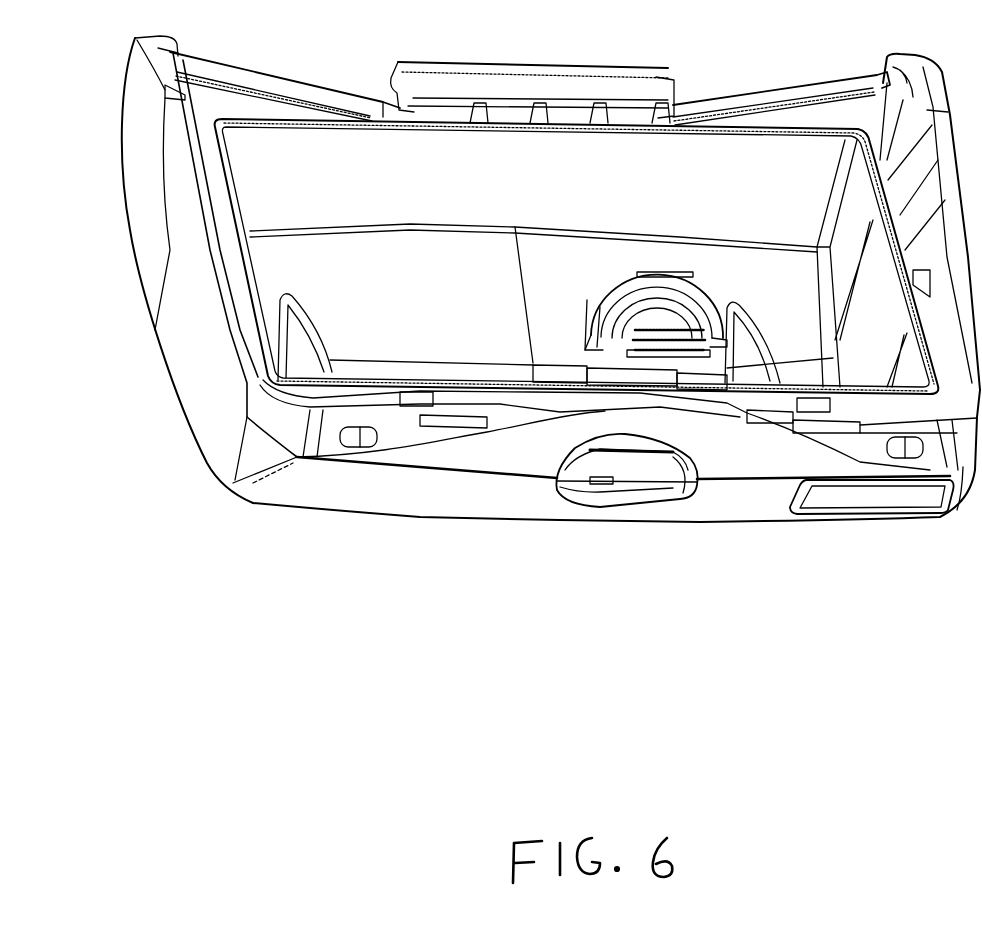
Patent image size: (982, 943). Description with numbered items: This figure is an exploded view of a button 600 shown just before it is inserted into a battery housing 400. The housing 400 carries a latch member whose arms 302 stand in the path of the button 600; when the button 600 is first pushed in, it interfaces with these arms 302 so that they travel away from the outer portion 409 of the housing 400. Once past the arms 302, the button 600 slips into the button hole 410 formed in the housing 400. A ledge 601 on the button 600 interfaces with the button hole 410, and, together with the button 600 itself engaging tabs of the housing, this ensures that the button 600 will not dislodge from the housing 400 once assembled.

The lower housing 400 is at (343, 510).
The outer portion 409 is at (737, 497).
The button hole 410 is at (583, 470).
The arms 302 is at (553, 365).
The button 600 is at (607, 300).
The ledge 601 is at (707, 303).